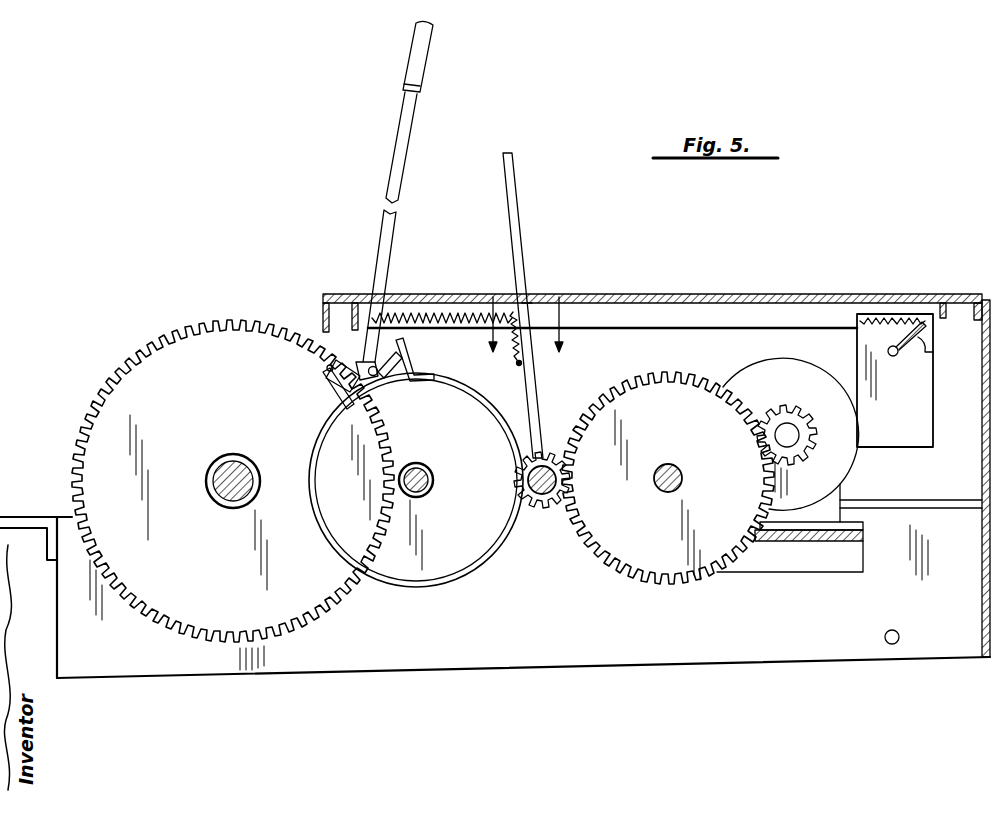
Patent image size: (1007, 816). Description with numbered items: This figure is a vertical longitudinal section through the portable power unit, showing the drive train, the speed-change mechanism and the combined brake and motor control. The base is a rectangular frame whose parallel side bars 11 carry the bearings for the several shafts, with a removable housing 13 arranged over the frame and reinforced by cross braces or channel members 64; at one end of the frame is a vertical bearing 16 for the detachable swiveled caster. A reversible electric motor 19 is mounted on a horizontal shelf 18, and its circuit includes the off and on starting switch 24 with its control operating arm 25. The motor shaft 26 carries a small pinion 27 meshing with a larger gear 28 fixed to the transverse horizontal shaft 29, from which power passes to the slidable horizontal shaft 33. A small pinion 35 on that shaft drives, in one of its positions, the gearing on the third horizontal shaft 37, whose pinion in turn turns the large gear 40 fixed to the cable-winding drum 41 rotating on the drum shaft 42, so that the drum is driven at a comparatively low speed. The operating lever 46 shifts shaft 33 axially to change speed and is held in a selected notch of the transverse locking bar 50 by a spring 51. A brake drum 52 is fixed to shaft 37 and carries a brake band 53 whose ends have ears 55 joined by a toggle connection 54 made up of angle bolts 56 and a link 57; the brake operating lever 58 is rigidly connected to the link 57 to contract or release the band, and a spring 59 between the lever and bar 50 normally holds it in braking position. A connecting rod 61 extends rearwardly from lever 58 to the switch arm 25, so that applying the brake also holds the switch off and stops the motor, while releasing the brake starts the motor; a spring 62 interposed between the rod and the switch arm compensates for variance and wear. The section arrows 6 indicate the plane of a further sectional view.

The side bars 11 is at (565, 657).
The removable housing 13 is at (718, 296).
The vertical bearing 16 is at (3, 520).
The shelf 18 is at (866, 536).
The reversible electric motor 19 is at (763, 378).
The off and on starting switch 24 is at (895, 380).
The control operating arm 25 is at (933, 352).
The motor shaft 26 is at (790, 442).
The small pinion 27 is at (800, 410).
The larger gear 28 is at (684, 582).
The transverse horizontal shaft 29 is at (682, 484).
The slidable horizontal shaft 33 is at (556, 485).
The small pinion 35 is at (543, 505).
The third horizontal shaft 37 is at (435, 483).
The large gear 40 is at (233, 495).
The cable-winding drum 41 is at (160, 340).
The drum shaft 42 is at (236, 502).
The operating lever 46 is at (520, 205).
The locking bar 50 is at (537, 300).
The spring 51 is at (516, 362).
The brake drum 52 is at (425, 578).
The brake band 53 is at (466, 575).
The toggle connection 54 is at (380, 383).
The ears 55 is at (333, 395).
The angle bolts 56 is at (402, 300).
The link 57 is at (337, 357).
The brake operating lever 58 is at (402, 110).
The spring 59 is at (465, 305).
The connecting rod 61 is at (640, 322).
The spring 62 is at (875, 327).
The channel members 64 is at (322, 320).
The section arrows 6 is at (525, 338).